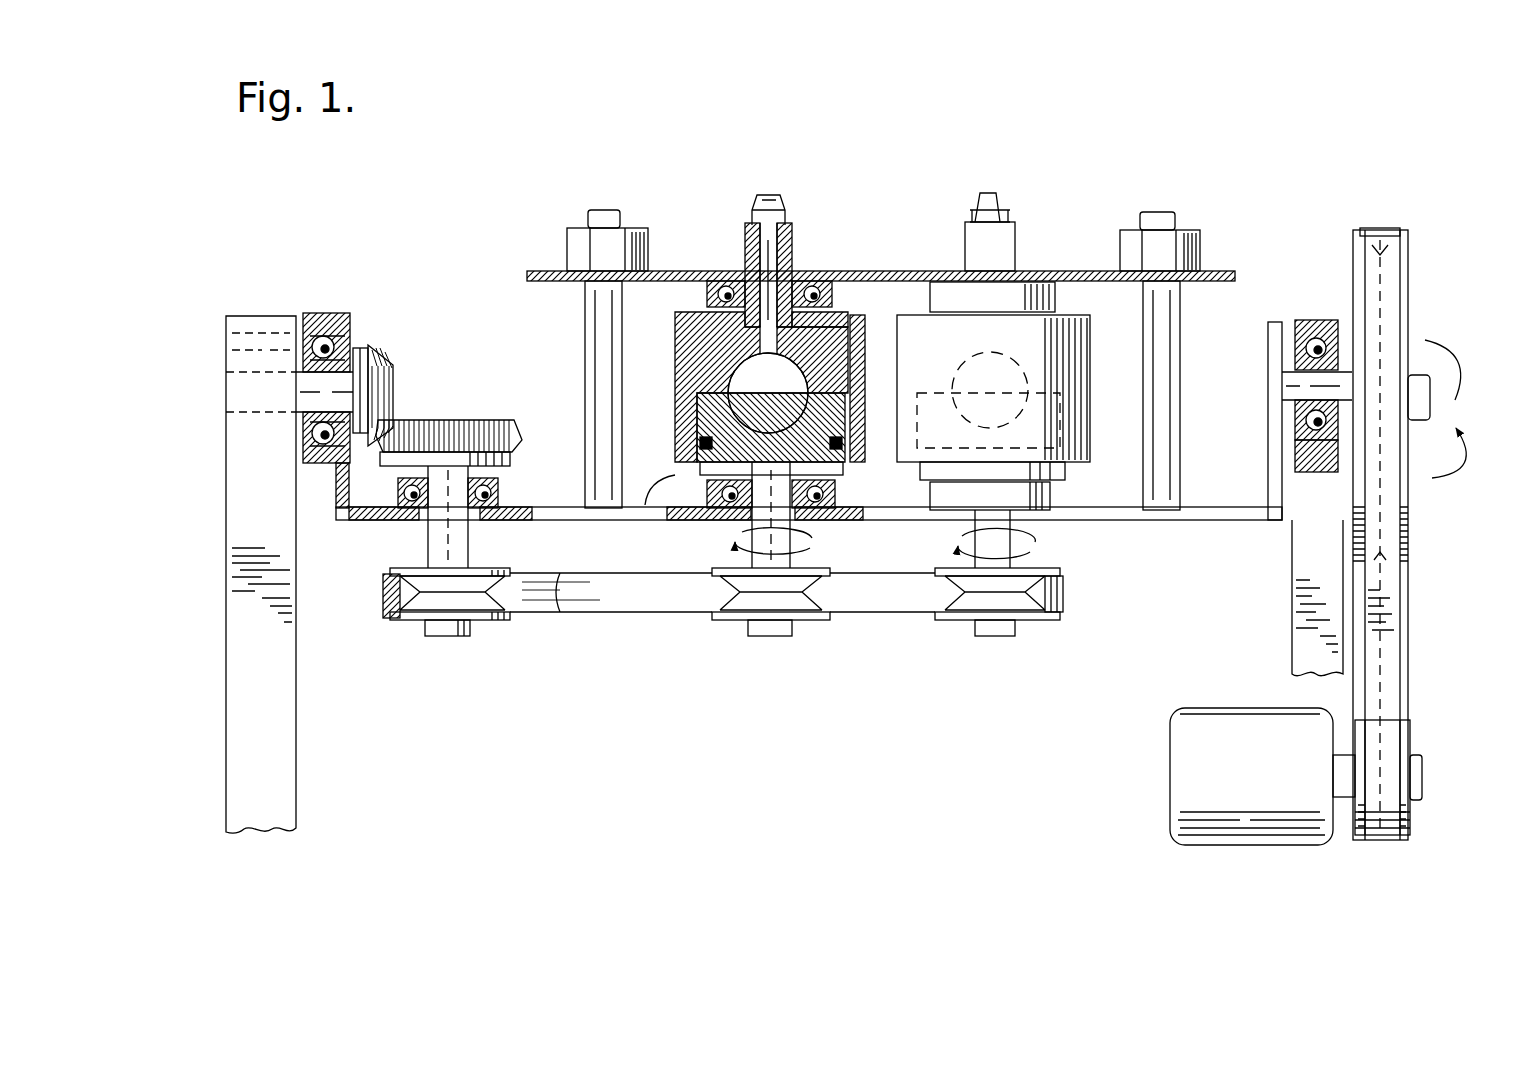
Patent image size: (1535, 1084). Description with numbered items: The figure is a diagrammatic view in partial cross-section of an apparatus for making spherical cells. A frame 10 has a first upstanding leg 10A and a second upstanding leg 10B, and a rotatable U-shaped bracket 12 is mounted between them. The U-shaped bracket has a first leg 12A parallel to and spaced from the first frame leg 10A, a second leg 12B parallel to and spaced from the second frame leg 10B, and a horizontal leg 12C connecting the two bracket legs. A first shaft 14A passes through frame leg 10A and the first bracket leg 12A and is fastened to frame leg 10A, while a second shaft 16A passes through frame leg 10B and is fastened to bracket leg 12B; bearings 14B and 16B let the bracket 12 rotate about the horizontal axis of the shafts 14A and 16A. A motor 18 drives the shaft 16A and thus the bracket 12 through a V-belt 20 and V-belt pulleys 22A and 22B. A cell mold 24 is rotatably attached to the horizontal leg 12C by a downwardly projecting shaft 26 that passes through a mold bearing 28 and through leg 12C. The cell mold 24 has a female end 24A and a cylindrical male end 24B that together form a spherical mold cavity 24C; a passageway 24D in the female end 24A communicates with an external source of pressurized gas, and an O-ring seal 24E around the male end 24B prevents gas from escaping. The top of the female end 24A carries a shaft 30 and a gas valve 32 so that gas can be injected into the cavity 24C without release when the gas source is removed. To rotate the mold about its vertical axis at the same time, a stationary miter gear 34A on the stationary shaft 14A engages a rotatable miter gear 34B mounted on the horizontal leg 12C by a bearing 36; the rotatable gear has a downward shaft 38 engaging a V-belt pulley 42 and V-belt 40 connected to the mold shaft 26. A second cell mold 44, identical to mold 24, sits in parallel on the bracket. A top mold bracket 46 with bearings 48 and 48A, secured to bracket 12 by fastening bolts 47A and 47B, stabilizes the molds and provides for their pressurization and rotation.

The frame 10 is at (222, 648).
The first upstanding leg 10A is at (242, 745).
The second upstanding leg 10B is at (1292, 662).
The U-shaped bracket 12 is at (1235, 528).
The first leg 12A is at (336, 498).
The second leg 12B is at (1276, 325).
The horizontal leg 12C is at (888, 518).
The first shaft 14A is at (265, 392).
The bearing 14B is at (320, 340).
The second shaft 16A is at (1335, 390).
The bearing 16B is at (1320, 335).
The motor 18 is at (1262, 774).
The V-belt 20 is at (1395, 658).
The V-belt pulley 22A is at (1410, 516).
The V-belt pulley 22B is at (1415, 738).
The cell mold 24 is at (668, 388).
The female end 24A is at (702, 362).
The cylindrical male end 24B is at (722, 463).
The mold cavity 24C is at (790, 418).
The passageway 24D is at (826, 328).
The O-ring seal 24E is at (700, 466).
The shaft 26 is at (790, 532).
The mold bearing 28 is at (838, 500).
The shaft 30 is at (795, 250).
The gas valve 32 is at (750, 210).
The stationary miter gear 34A is at (376, 345).
The rotatable miter gear 34B is at (520, 428).
The bearing 36 is at (494, 500).
The shaft 38 is at (446, 542).
The V-belt 40 is at (382, 590).
The V-belt pulley 42 is at (428, 622).
The second cell mold 44 is at (1005, 418).
The top mold bracket 46 is at (942, 270).
The fastening bolt 47A is at (585, 390).
The fastening bolt 47B is at (1182, 428).
The bearing 48 is at (722, 280).
The bearing 48A is at (1058, 293).